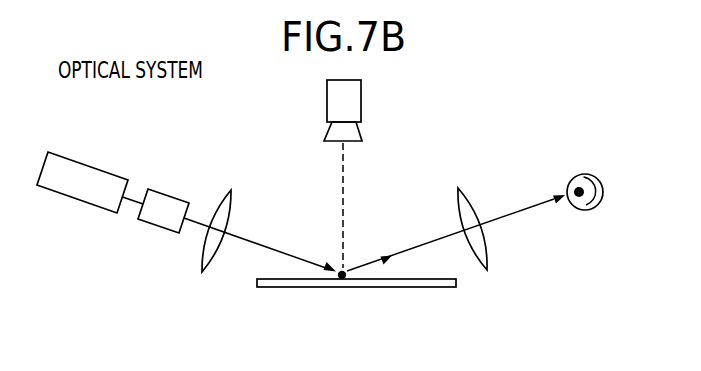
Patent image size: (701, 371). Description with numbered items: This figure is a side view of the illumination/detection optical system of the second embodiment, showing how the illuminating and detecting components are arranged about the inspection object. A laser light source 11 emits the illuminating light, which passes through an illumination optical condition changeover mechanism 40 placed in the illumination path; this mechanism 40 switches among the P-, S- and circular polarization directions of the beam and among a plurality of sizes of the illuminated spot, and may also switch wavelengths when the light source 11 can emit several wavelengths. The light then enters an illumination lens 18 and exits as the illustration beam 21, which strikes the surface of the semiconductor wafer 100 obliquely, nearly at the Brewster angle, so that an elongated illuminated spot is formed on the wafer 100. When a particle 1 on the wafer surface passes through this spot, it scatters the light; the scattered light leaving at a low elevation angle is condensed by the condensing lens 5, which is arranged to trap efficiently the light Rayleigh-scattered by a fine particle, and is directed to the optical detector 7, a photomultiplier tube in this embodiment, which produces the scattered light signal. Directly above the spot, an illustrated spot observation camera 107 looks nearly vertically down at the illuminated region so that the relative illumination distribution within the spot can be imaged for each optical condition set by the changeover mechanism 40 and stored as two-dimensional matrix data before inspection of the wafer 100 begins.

The particle 1 is at (348, 268).
The condensing lens 5 is at (467, 192).
The optical detector 7 is at (577, 176).
The light source 11 is at (85, 165).
The illumination lens 18 is at (219, 199).
The illustration beam 21 is at (272, 248).
The illumination optical condition changeover mechanism 40 is at (157, 226).
The semiconductor wafer 100 is at (385, 288).
The illustrated spot observation camera 107 is at (327, 99).